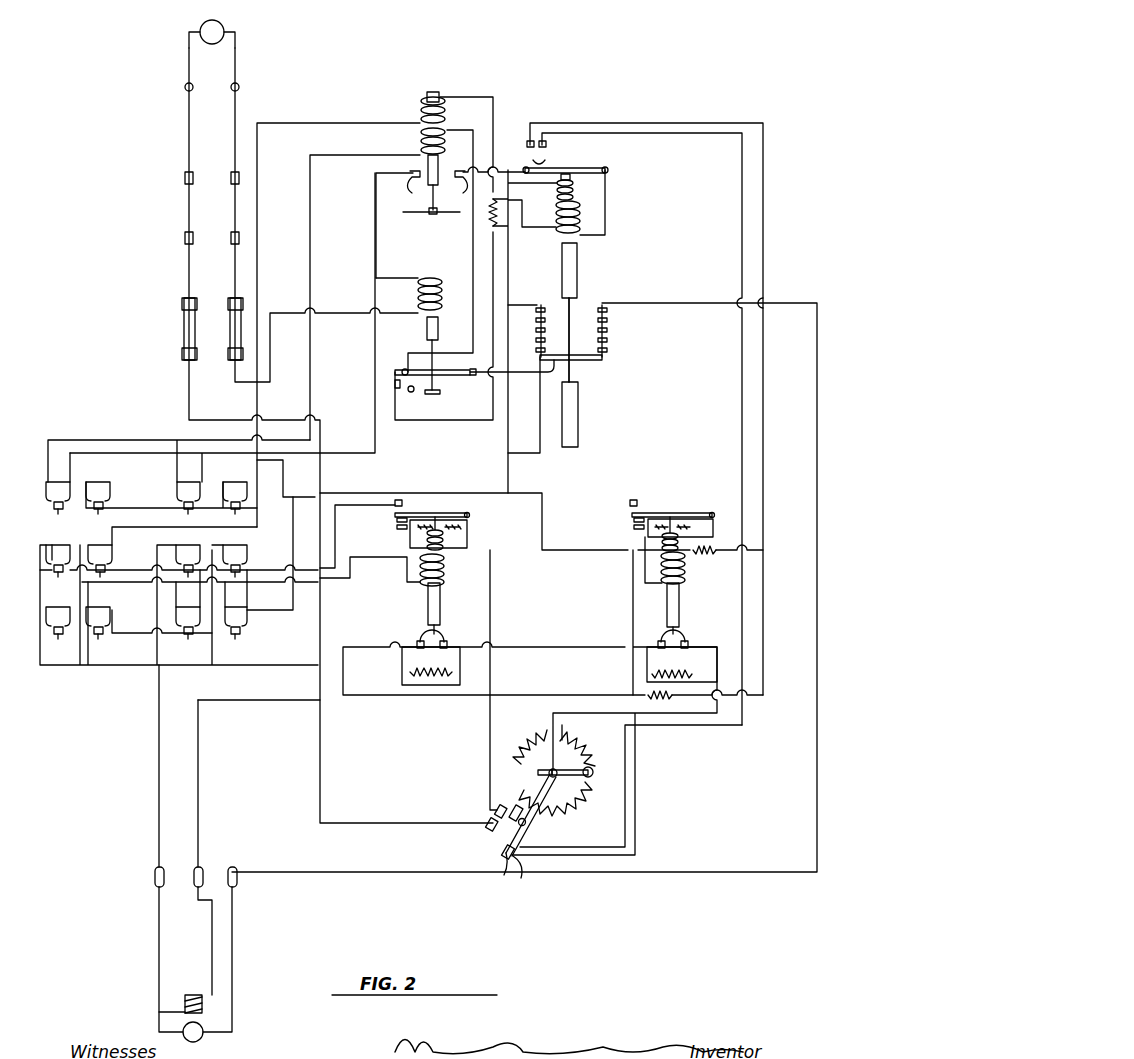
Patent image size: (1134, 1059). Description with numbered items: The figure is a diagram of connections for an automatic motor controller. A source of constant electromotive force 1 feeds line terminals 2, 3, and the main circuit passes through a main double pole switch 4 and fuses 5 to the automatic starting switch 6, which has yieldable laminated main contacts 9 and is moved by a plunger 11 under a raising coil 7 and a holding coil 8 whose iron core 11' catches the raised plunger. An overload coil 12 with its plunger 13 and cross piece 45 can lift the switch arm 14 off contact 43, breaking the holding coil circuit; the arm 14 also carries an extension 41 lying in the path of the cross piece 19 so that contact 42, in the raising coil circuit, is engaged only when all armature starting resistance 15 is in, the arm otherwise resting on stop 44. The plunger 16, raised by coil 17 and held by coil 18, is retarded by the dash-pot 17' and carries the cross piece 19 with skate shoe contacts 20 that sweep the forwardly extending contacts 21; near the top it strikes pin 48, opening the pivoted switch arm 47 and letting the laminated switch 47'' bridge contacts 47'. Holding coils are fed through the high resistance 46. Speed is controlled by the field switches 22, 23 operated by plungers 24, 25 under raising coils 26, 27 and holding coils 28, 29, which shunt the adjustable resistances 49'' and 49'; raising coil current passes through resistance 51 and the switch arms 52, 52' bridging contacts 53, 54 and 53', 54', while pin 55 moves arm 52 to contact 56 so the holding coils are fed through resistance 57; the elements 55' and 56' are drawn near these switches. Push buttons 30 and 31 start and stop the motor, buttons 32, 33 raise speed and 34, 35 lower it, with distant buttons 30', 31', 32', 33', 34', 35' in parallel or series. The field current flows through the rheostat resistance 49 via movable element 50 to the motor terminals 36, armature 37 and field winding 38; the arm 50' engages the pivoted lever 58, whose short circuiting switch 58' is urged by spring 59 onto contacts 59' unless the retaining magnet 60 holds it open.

The source of constant electromotive force 1 is at (213, 20).
The line terminal 2 is at (185, 90).
The line terminal 3 is at (239, 90).
The main double pole switch 4 is at (233, 214).
The fuses 5 is at (229, 328).
The automatic starting switch 6 is at (404, 211).
The raising coil 7 is at (420, 137).
The holding coil 8 is at (425, 99).
The yieldable laminated main contacts 9 is at (438, 183).
The plunger 11 is at (451, 173).
The iron core of holding coil 11' is at (460, 80).
The overload coil 12 is at (431, 279).
The plunger 13 is at (427, 328).
The switch arm 14 is at (456, 376).
The armature starting resistance 15 is at (534, 320).
The plunger 16 is at (578, 270).
The raising coil 17 is at (558, 217).
The dash-pot 17' is at (592, 414).
The holding coil 18 is at (575, 191).
The cross piece 19 is at (582, 354).
The yieldable contacts 20 is at (549, 354).
The forwardly extending contacts 21 is at (549, 313).
The speed controlling switch 22 is at (440, 641).
The speed controlling switch 23 is at (685, 642).
The plunger 24 is at (440, 604).
The plunger 25 is at (680, 611).
The raising coil 26 is at (445, 571).
The raising coil 27 is at (686, 580).
The holding coil 28 is at (446, 546).
The holding coil 29 is at (682, 545).
The starting push button switch 30 is at (188, 487).
The additional starting push button 30' is at (58, 487).
The stopping push button switch 31 is at (235, 487).
The additional stopping push button 31' is at (100, 487).
The speed increasing push button switch 32 is at (188, 550).
The additional speed controlling push button 32' is at (58, 550).
The speed increasing push button switch 33 is at (235, 550).
The additional speed controlling push button 33' is at (102, 550).
The speed decreasing push button 34 is at (188, 612).
The additional push button switch 34' is at (58, 631).
The speed decreasing push button 35 is at (236, 612).
The additional push button switch 35' is at (100, 612).
The terminal connections for the motor 36 is at (228, 878).
The armature 37 is at (203, 1037).
The field winding 38 is at (190, 995).
The extension 41 is at (522, 376).
The contact 42 is at (400, 371).
The contact 43 is at (394, 384).
The stop 44 is at (408, 391).
The cross piece 45 is at (426, 395).
The high resistance 46 is at (489, 216).
The pivoted switch arm 47 is at (565, 154).
The contacts 47' is at (526, 121).
The laminated switch 47'' is at (521, 154).
The pin 48 is at (572, 180).
The resistance of manually operated rheostat 49 is at (565, 777).
The adjustable resistance 49' is at (682, 664).
The adjustable resistance 49'' is at (431, 666).
The movable element 50 is at (572, 761).
The outwardly extending arm 50' is at (540, 760).
The resistance 51 is at (665, 702).
The switch arm 52 is at (673, 512).
The switch arm 52' is at (431, 506).
The contact 53 is at (611, 535).
The contact 53' is at (379, 535).
The contact 54 is at (610, 511).
The contact 54' is at (379, 512).
The pin 55 is at (672, 527).
The contact 55' is at (466, 518).
The contact 56 is at (646, 488).
The terminal 56' is at (416, 485).
The resistance 57 is at (706, 554).
The pivoted lever 58 is at (544, 815).
The short circuiting switch 58' is at (479, 847).
The spring 59 is at (541, 821).
The contacts 59' is at (529, 872).
The retaining magnet 60 is at (494, 814).